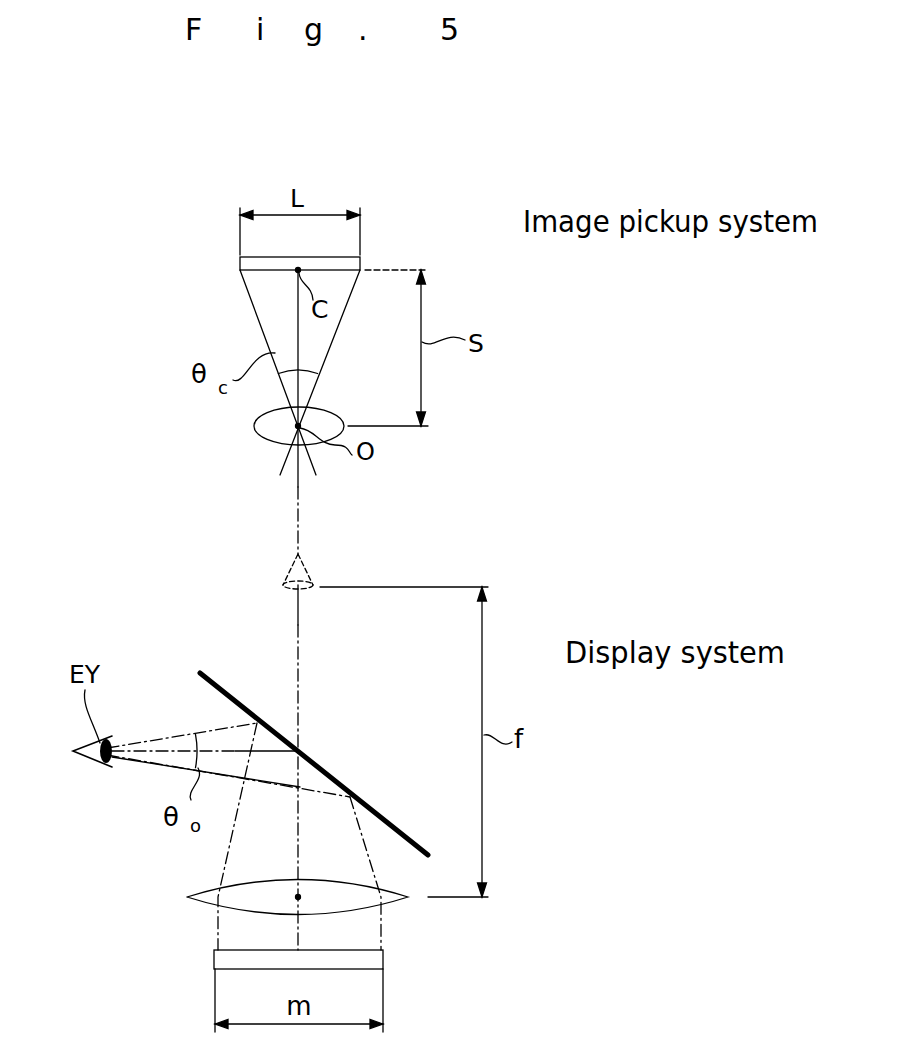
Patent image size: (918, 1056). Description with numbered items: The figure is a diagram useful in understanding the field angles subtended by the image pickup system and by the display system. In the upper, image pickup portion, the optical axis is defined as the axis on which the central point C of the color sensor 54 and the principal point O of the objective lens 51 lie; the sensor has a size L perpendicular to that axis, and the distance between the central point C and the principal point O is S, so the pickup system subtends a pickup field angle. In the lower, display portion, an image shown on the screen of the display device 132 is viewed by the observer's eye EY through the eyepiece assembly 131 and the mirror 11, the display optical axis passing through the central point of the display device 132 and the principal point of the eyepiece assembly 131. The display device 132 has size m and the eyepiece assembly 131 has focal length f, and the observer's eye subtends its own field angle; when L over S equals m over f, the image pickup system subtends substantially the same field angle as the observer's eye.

The color sensor 54 is at (240, 263).
The objective lens 51 is at (268, 425).
The mirror 11 is at (216, 677).
The eyepiece assembly 131 is at (187, 897).
The display device 132 is at (214, 958).